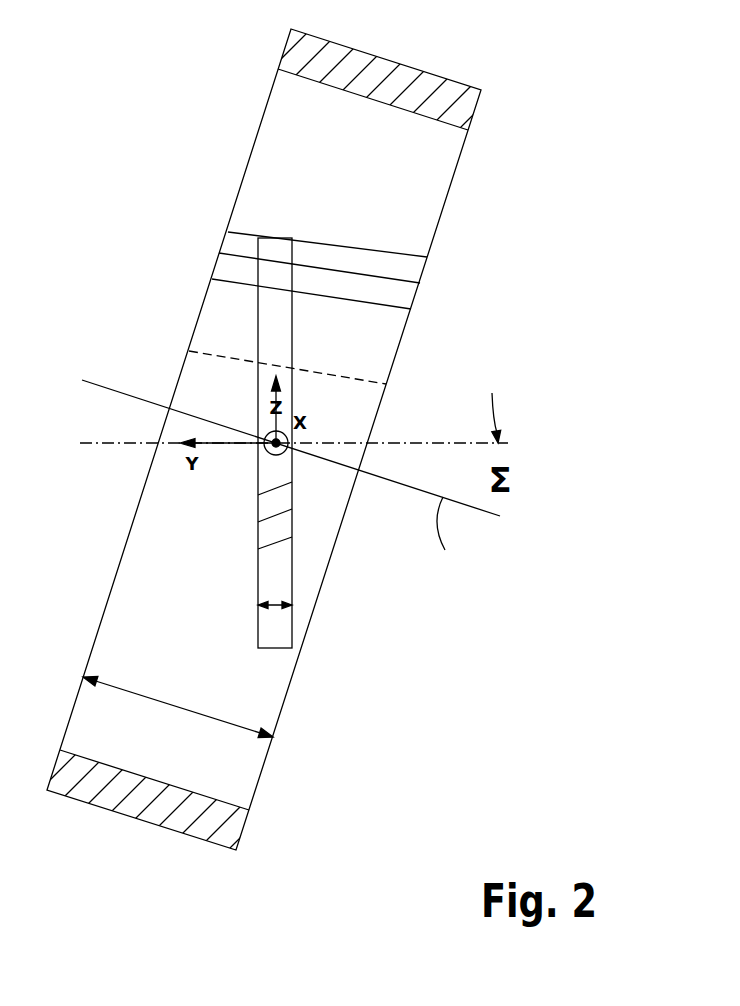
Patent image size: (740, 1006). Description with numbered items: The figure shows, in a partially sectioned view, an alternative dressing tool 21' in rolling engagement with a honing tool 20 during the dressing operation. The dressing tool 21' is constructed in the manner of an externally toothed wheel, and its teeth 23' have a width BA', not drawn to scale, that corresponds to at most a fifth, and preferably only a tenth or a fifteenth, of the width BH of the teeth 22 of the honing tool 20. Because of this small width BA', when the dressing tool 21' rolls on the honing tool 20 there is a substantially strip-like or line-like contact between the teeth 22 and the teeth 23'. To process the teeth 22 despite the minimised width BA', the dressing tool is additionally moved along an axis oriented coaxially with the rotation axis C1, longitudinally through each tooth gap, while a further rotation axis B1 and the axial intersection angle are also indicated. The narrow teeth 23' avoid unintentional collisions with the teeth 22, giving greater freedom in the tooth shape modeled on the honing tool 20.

The honing tool 20 is at (278, 119).
The dressing tool 21' is at (223, 443).
The teeth of the honing tool 22 is at (403, 266).
The teeth of the dressing tool 23' is at (154, 515).
The width of the teeth 23' BA' is at (312, 624).
The width of the teeth 22 BH is at (178, 705).
The rotation axis B1 is at (482, 525).
The rotation axis C1 is at (409, 443).